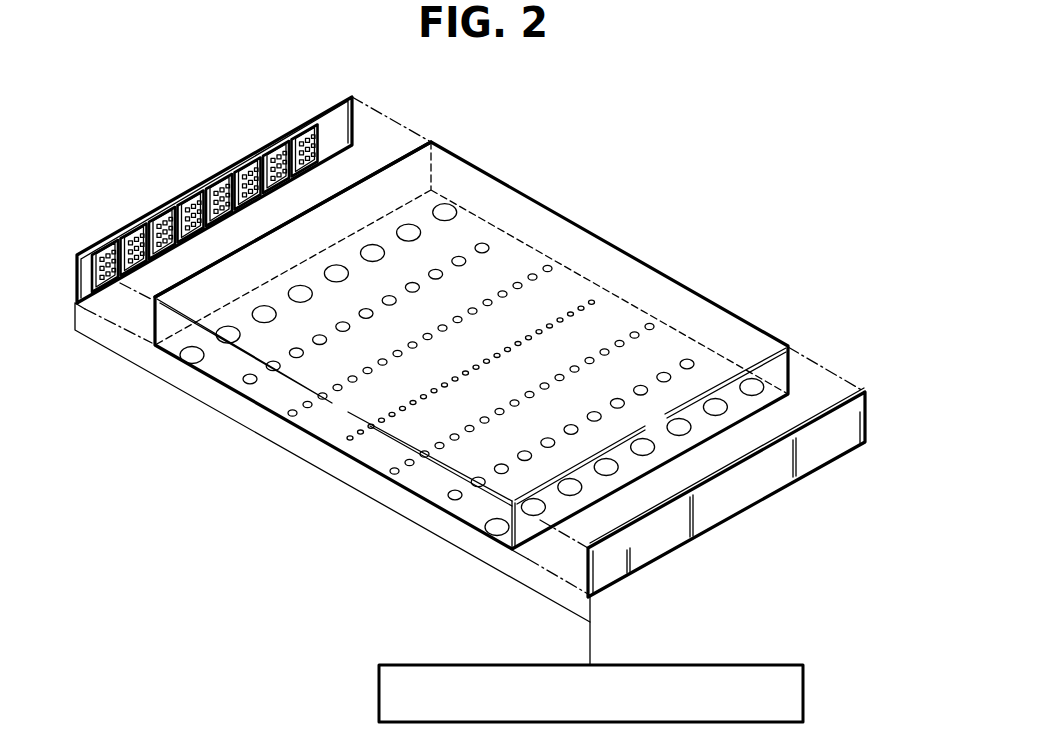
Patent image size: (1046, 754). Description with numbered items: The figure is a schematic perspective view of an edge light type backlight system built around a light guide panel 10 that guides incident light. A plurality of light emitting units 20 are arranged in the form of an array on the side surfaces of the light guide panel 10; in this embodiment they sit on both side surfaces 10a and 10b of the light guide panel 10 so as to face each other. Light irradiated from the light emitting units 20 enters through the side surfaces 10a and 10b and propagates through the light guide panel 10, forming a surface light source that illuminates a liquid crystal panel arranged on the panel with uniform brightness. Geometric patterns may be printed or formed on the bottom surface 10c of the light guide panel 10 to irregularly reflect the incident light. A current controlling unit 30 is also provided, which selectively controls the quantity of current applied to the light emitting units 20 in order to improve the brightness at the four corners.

The light guide panel 10 is at (640, 278).
The side surface 10a is at (391, 164).
The side surface 10b is at (778, 375).
The bottom surface 10c is at (468, 528).
The light emitting units 20 is at (243, 158).
The current controlling unit 30 is at (805, 692).